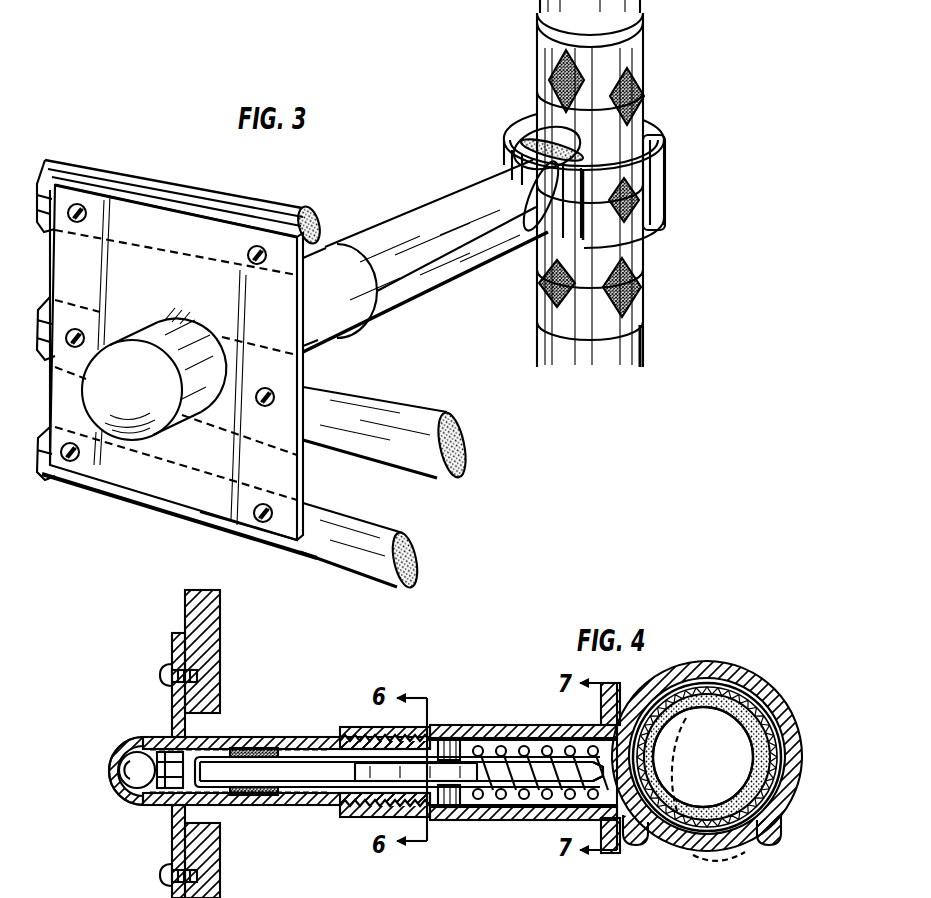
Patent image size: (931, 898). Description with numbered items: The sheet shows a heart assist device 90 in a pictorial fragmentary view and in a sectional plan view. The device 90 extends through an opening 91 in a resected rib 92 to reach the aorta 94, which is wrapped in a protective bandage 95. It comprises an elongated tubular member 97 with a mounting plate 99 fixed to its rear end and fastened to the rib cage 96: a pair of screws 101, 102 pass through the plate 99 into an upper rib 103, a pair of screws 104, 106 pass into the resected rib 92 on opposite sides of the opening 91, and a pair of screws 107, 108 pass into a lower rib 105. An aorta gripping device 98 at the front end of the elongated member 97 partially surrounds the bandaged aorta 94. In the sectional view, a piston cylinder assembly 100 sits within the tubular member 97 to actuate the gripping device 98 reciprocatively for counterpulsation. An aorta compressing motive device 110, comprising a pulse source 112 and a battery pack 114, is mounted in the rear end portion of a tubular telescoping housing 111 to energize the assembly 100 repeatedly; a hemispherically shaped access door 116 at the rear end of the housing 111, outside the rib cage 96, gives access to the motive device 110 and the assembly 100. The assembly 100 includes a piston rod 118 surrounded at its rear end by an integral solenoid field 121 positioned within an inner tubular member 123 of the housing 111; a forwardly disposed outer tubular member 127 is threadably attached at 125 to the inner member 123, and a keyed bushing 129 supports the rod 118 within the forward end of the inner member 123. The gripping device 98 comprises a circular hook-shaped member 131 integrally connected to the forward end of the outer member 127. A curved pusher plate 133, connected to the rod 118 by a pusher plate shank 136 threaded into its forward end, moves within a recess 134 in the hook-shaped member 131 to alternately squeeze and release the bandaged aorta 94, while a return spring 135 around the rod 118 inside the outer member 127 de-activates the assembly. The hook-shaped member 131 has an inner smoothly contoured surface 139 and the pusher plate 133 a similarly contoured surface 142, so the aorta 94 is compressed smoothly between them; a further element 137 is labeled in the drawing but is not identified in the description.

In FIG. 3, the heart assist device 90 is at (434, 260).
In FIG. 3, the opening 91 is at (303, 468).
In FIG. 4, the opening 91 is at (200, 723).
In FIG. 3, the resected rib 92 is at (420, 427).
In FIG. 4, the resected rib 92 is at (193, 610).
In FIG. 3, the aorta 94 is at (633, 348).
In FIG. 4, the aorta 94 is at (690, 707).
In FIG. 3, the protective bandage 95 is at (552, 70).
In FIG. 4, the protective bandage 95 is at (725, 686).
In FIG. 3, the rib cage 96 is at (301, 568).
In FIG. 3, the elongated tubular member 97 is at (432, 202).
In FIG. 4, the elongated tubular member 97 is at (450, 722).
In FIG. 3, the aorta gripping device 98 is at (575, 167).
In FIG. 4, the aorta gripping device 98 is at (660, 750).
In FIG. 3, the mounting plate 99 is at (183, 480).
In FIG. 4, the piston cylinder assembly 100 is at (243, 770).
In FIG. 3, the screw 101 is at (92, 208).
In FIG. 3, the screw 102 is at (252, 248).
In FIG. 3, the upper rib 103 is at (85, 226).
In FIG. 3, the screw 104 is at (70, 330).
In FIG. 4, the screw 104 is at (170, 674).
In FIG. 3, the lower rib 105 is at (373, 547).
In FIG. 3, the screw 106 is at (301, 357).
In FIG. 4, the screw 106 is at (167, 875).
In FIG. 3, the screw 107 is at (73, 466).
In FIG. 3, the screw 108 is at (255, 520).
In FIG. 4, the aorta compressing motive device 110 is at (138, 762).
In FIG. 3, the tubular telescoping housing 111 is at (418, 292).
In FIG. 4, the tubular telescoping housing 111 is at (473, 724).
In FIG. 4, the pulse source 112 is at (173, 788).
In FIG. 4, the battery pack 114 is at (132, 787).
In FIG. 3, the hemispherically shaped access door 116 is at (128, 382).
In FIG. 4, the hemispherically shaped access door 116 is at (137, 744).
In FIG. 4, the piston rod 118 is at (313, 770).
In FIG. 4, the integral solenoid field 121 is at (247, 787).
In FIG. 4, the inner tubular member 123 is at (227, 740).
In FIG. 4, the threaded attachment 125 is at (363, 813).
In FIG. 4, the outer tubular member 127 is at (493, 812).
In FIG. 4, the keyed bushing 129 is at (428, 737).
In FIG. 3, the circular hook-shaped member 131 is at (657, 126).
In FIG. 4, the circular hook-shaped member 131 is at (773, 828).
In FIG. 3, the pusher plate 133 is at (505, 150).
In FIG. 4, the pusher plate 133 is at (623, 730).
In FIG. 4, the recess 134 is at (597, 820).
In FIG. 4, the return spring 135 is at (466, 800).
In FIG. 4, the pusher plate shank 136 is at (536, 737).
In FIG. 4, the rod end 137 is at (568, 785).
In FIG. 3, the inner smoothly contoured surface 139 is at (648, 182).
In FIG. 4, the contoured surface 142 is at (643, 713).